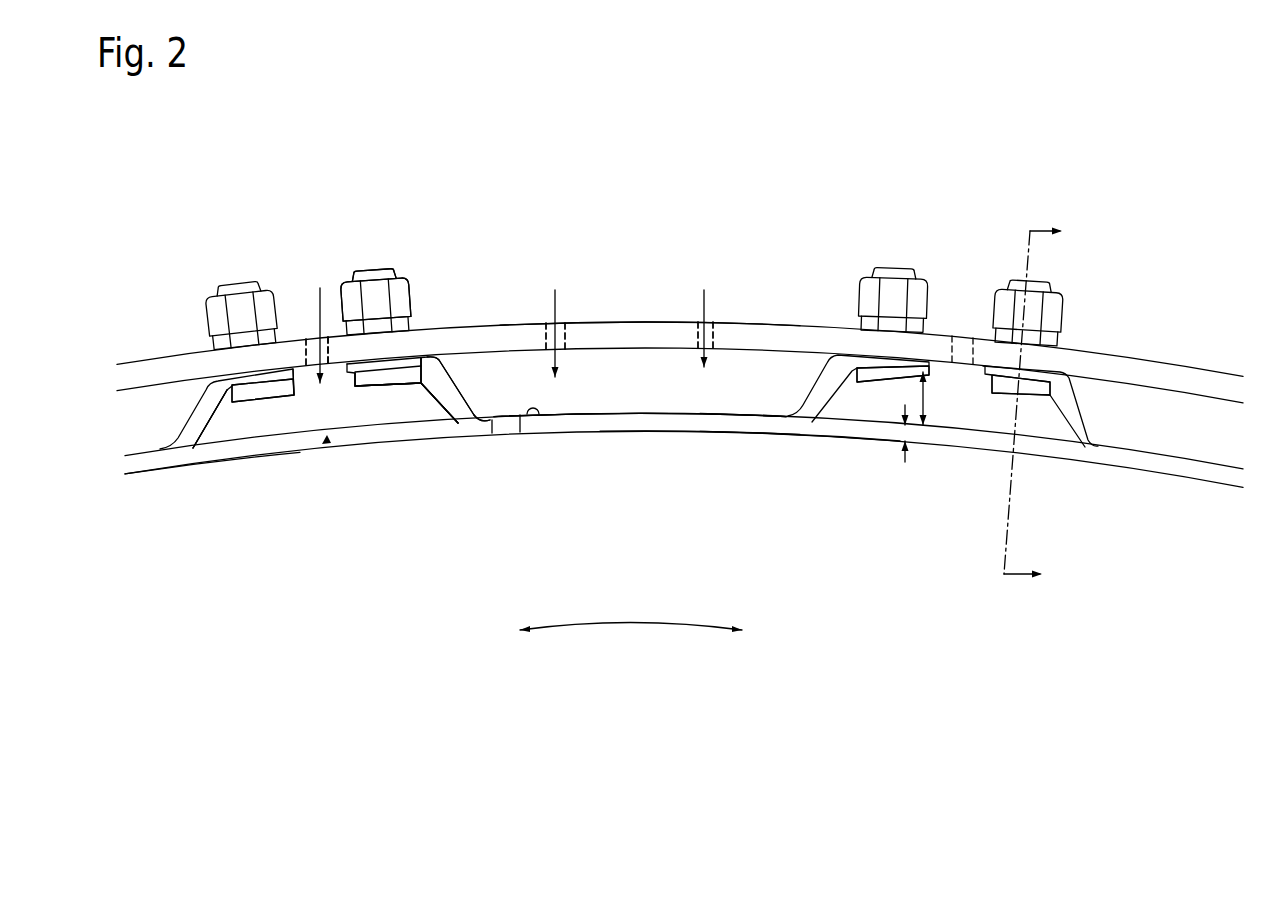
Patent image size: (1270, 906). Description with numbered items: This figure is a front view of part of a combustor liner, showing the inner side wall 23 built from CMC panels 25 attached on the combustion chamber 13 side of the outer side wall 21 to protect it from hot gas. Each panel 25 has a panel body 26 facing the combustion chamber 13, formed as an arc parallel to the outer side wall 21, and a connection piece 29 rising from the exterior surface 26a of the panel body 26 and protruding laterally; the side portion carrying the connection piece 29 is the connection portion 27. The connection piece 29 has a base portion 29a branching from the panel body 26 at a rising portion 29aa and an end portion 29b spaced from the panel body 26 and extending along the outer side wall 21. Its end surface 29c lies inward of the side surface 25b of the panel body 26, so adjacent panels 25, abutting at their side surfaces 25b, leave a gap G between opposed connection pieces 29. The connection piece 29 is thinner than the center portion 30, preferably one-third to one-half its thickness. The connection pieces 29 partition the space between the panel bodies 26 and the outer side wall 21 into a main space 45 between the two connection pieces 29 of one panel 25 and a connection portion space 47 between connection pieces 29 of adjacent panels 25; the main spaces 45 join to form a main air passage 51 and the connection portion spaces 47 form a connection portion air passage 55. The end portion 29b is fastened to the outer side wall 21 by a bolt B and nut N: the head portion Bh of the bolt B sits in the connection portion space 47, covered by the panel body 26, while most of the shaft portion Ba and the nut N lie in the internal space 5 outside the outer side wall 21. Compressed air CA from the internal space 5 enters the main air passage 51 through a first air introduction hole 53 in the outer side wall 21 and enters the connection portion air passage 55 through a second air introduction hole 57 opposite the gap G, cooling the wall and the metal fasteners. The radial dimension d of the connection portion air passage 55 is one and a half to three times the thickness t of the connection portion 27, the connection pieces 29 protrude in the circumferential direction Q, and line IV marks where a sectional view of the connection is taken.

The internal space 5 is at (690, 173).
The combustion chamber 13 is at (853, 598).
The outer side wall 21 is at (777, 318).
The inner side wall 23 is at (137, 478).
The panel 25 is at (162, 467).
The side surface 25b is at (327, 444).
The panel body 26 is at (768, 435).
The exterior side surface 26a is at (523, 416).
The connection portion 27 is at (236, 458).
The connection piece 29 is at (563, 207).
The base portion 29a is at (460, 385).
The rising portion 29aa is at (486, 420).
The end portion 29b is at (407, 362).
The end surface 29c is at (328, 365).
The center portion 30 is at (733, 413).
The main space 45 is at (620, 398).
The main air passage 51 is at (640, 391).
The connection portion space 47 is at (307, 425).
The connection portion air passage 55 is at (325, 415).
The first air introduction hole 53 is at (700, 318).
The second air introduction hole 57 is at (308, 343).
The bolt B is at (380, 264).
The shaft portion Ba is at (363, 272).
The head portion Bh is at (400, 387).
The nut N is at (398, 280).
The gap G is at (290, 367).
The compressed air CA is at (312, 338).
The circumferential direction Q is at (626, 632).
The thickness t is at (905, 462).
The radial-direction dimension d is at (927, 397).
The section line IV is at (1030, 401).